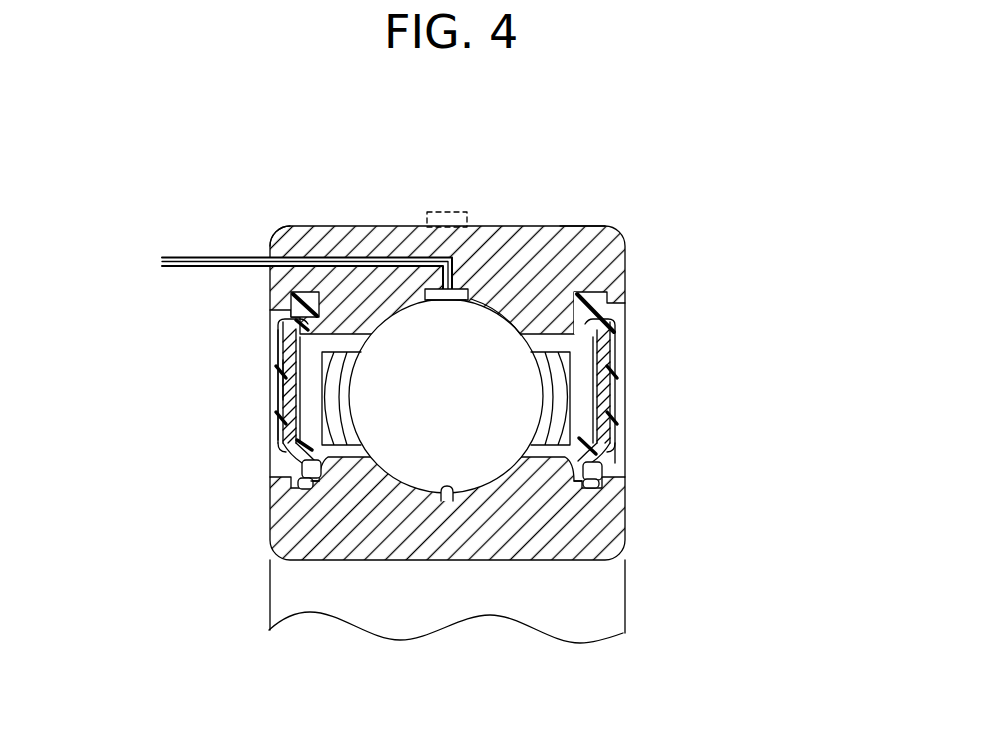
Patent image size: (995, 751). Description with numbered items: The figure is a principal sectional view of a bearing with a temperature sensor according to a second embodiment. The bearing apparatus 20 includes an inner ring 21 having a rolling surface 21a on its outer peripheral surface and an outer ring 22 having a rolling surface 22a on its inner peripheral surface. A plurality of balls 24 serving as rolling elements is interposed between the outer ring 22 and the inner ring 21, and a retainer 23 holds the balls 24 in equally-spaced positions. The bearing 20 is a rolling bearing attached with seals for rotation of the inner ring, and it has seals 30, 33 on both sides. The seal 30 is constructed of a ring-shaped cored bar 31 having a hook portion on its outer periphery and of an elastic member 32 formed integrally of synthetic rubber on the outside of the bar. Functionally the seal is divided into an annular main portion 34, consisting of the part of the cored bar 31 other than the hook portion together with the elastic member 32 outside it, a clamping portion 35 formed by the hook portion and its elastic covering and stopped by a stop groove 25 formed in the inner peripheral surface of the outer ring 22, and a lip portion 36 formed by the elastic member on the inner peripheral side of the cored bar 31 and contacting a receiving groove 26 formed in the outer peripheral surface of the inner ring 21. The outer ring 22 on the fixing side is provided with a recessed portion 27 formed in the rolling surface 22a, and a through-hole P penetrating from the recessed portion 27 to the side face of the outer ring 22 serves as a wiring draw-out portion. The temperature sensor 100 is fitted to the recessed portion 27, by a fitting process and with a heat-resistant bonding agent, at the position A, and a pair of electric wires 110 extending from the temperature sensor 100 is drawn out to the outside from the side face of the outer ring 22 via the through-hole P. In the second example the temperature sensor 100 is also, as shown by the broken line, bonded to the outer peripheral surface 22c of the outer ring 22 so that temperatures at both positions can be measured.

The bearing apparatus 20 is at (718, 196).
The inner ring 21 is at (597, 524).
The rolling surface 21a is at (447, 498).
The outer ring 22 is at (485, 258).
The rolling surface 22a is at (496, 322).
The outer peripheral surface 22c is at (607, 225).
The retainer 23 is at (563, 398).
The balls 24 is at (488, 448).
The stop groove 25 is at (292, 299).
The receiving groove 26 is at (590, 471).
The recessed portion 27 is at (455, 301).
The seal 30 is at (270, 401).
The cored bar 31 is at (290, 420).
The elastic member 32 is at (280, 343).
The seal 33 is at (623, 367).
The annular main portion 34 is at (280, 378).
The clamping portion 35 is at (283, 313).
The lip portion 36 is at (292, 480).
The temperature sensor 100 is at (443, 212).
The electric wires 110 is at (176, 257).
The through-hole P is at (288, 252).
The position A is at (468, 280).